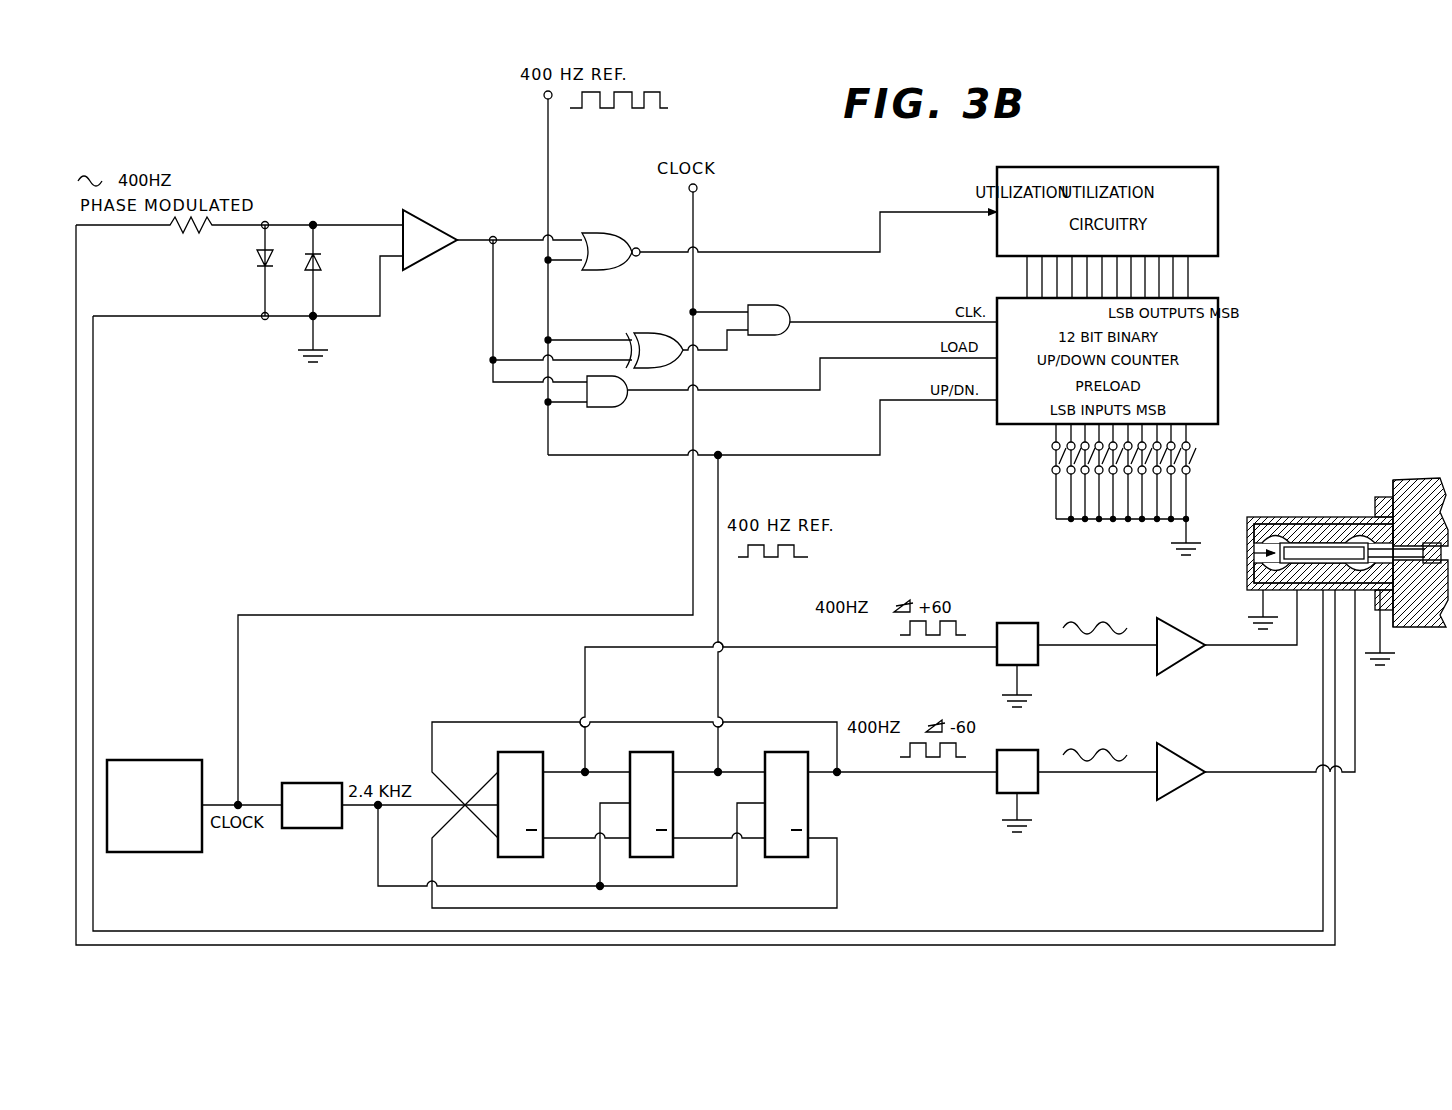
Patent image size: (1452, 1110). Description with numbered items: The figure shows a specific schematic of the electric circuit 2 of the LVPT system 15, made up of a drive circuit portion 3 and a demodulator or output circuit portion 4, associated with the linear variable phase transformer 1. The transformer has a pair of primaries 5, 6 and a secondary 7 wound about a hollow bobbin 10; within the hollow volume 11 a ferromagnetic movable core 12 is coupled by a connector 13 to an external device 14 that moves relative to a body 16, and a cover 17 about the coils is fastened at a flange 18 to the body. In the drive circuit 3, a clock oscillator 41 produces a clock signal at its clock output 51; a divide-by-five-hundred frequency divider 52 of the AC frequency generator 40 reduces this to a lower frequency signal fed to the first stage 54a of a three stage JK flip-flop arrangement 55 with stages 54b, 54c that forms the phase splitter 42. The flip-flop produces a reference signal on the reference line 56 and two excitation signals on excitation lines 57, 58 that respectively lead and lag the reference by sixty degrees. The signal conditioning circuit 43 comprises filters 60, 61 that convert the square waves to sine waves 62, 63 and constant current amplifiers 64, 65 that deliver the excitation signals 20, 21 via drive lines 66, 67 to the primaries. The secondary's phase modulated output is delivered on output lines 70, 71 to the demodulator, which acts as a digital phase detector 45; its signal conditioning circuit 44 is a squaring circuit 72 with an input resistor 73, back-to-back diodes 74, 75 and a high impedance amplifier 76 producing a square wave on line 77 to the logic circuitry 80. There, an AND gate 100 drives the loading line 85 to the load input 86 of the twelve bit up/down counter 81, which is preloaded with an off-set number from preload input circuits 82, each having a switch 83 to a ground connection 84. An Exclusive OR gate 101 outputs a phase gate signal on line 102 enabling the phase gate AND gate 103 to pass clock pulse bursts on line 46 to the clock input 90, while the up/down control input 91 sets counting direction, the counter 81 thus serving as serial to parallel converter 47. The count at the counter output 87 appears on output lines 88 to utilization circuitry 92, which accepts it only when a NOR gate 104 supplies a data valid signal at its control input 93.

The linear variable phase transformer 1 is at (1316, 518).
The electric circuit 2 is at (217, 445).
The drive circuit portion 3 is at (408, 686).
The demodulator or output circuit portion 4 is at (385, 478).
The primary 5 is at (1268, 530).
The primary 6 is at (1362, 530).
The secondary 7 is at (1328, 524).
The bobbin 10 is at (1262, 543).
The hollow volume 11 is at (1258, 556).
The movable core 12 is at (1310, 550).
The connector 13 is at (1405, 560).
The external member or device 14 is at (1442, 542).
The LVPT system 15 is at (1265, 482).
The body or support 16 is at (1405, 492).
The cover 17 is at (1350, 516).
The flange 18 is at (1384, 496).
The excitation signal 20 is at (1200, 684).
The excitation signal 21 is at (1138, 826).
The AC signal or frequency generator 40 is at (322, 750).
The clock oscillator 41 is at (148, 760).
The phase splitter 42 is at (608, 776).
The signal conditioning circuit 43 is at (965, 578).
The signal conditioning circuit 44 is at (262, 348).
The digital phase detector 45 is at (435, 160).
The line 46 is at (842, 322).
The serial to parallel converter 47 is at (935, 445).
The clock output 51 is at (224, 803).
The frequency divider component 52 is at (312, 782).
The first stage 54a is at (495, 768).
The second stage 54b is at (658, 752).
The third stage 54c is at (790, 752).
The JK flip-flop circuit arrangement 55 is at (522, 736).
The reference line 56 is at (720, 685).
The excitation line 57 is at (845, 650).
The excitation line 58 is at (862, 774).
The filter 60 is at (1022, 622).
The filter 61 is at (1023, 750).
The sine wave 62 is at (1103, 620).
The sine wave 63 is at (1103, 748).
The amplifier 64 is at (1182, 622).
The amplifier 65 is at (1177, 750).
The drive line 66 is at (1218, 648).
The drive line 67 is at (1242, 770).
The output line 70 is at (76, 277).
The output line 71 is at (128, 320).
The signal conditioning squaring circuit 72 is at (205, 335).
The input resistor 73 is at (196, 230).
The diode 74 is at (258, 262).
The diode 75 is at (320, 262).
The high input impedance amplifier 76 is at (418, 216).
The line 77 is at (492, 236).
The logic circuitry 80 is at (618, 196).
The counter 81 is at (1220, 340).
The preload input circuits 82 is at (1046, 445).
The switch 83 is at (1055, 460).
The ground connection 84 is at (1172, 544).
The loading line 85 is at (772, 392).
The load input 86 is at (995, 360).
The counter output 87 is at (1232, 299).
The output lines 88 is at (1185, 280).
The clock input 90 is at (995, 325).
The up/down control input 91 is at (992, 403).
The utilization circuitry 92 is at (1219, 228).
The control input 93 is at (912, 210).
The AND gate 100 is at (606, 408).
The Exclusive OR gate 101 is at (660, 333).
The line 102 is at (732, 346).
The AND gate 103 is at (770, 305).
The NOR gate 104 is at (602, 233).